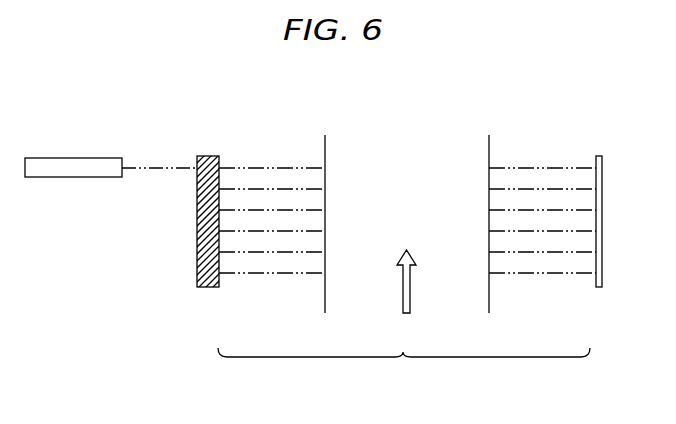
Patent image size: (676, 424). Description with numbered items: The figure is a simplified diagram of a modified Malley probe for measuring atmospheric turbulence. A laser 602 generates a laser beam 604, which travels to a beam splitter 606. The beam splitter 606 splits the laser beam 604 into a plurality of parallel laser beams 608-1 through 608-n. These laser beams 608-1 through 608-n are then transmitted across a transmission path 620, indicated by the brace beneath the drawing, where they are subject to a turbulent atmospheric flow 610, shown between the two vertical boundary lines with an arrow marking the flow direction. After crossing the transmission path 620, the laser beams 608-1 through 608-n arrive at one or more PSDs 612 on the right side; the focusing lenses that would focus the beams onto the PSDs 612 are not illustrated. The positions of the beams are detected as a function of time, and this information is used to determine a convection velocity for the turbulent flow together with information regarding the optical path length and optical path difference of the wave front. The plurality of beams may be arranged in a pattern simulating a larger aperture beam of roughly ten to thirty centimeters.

The laser 602 is at (67, 157).
The laser beam 604 is at (160, 166).
The beam splitter 606 is at (210, 155).
The laser beam 608-1 is at (281, 166).
The laser beam 608-n is at (271, 276).
The turbulent atmospheric flow 610 is at (437, 165).
The PSD 612 is at (603, 172).
The transmission path 620 is at (404, 369).